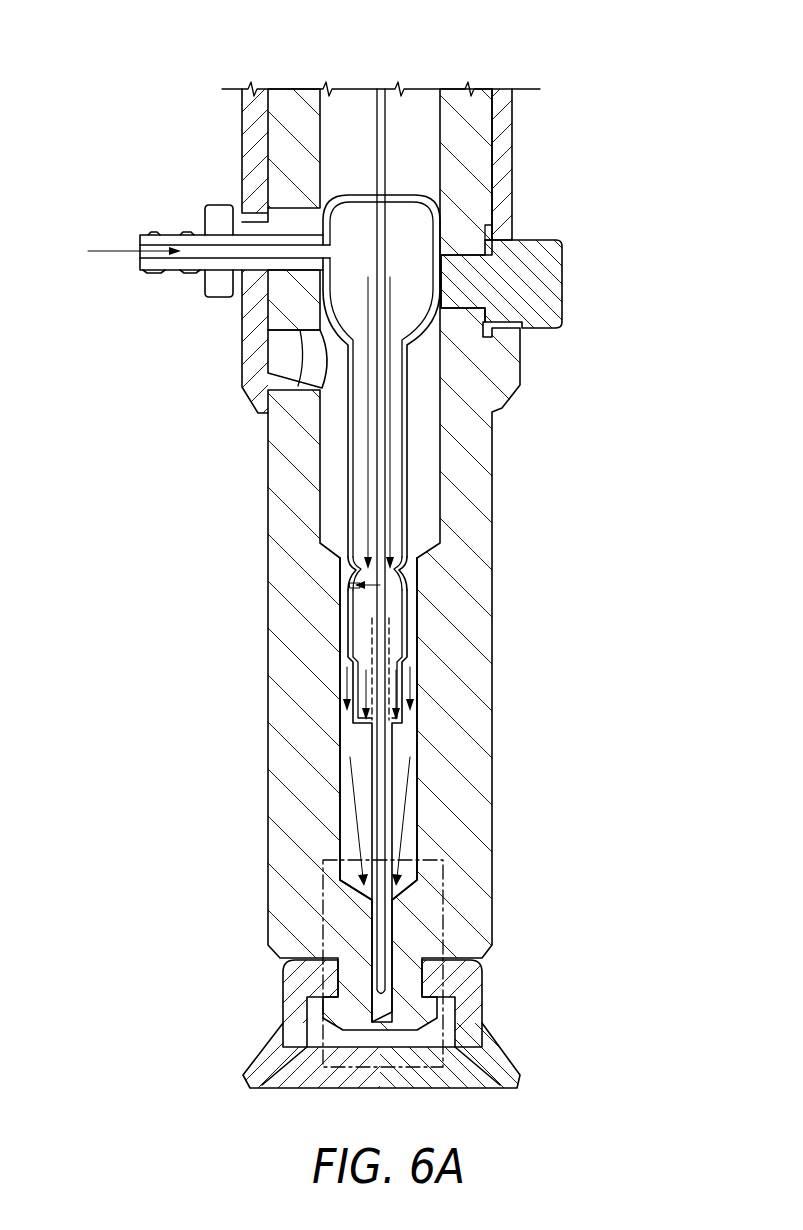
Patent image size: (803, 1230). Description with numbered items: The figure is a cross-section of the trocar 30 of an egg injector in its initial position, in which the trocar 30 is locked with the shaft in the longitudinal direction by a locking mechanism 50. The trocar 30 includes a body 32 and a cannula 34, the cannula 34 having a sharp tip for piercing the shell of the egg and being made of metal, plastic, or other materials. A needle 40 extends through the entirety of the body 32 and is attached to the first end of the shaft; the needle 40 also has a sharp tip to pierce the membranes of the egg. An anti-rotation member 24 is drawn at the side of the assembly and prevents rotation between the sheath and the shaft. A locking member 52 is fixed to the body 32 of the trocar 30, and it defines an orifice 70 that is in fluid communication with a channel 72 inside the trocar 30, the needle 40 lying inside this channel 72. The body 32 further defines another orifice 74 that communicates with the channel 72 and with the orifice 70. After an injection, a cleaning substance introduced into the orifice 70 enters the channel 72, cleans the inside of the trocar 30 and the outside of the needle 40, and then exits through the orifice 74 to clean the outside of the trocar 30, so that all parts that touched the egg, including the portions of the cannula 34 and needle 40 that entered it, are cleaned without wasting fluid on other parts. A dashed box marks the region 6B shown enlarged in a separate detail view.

The anti-rotation member 24 is at (563, 280).
The trocar 30 is at (446, 249).
The body 32 is at (355, 452).
The cannula 34 is at (377, 1007).
The needle 40 is at (394, 126).
The locking mechanism 50 is at (138, 290).
The locking member 52 is at (155, 233).
The orifice 70 is at (192, 248).
The channel 72 is at (340, 343).
The orifice 74 is at (347, 612).
The detail region of FIG. 6B is at (443, 930).